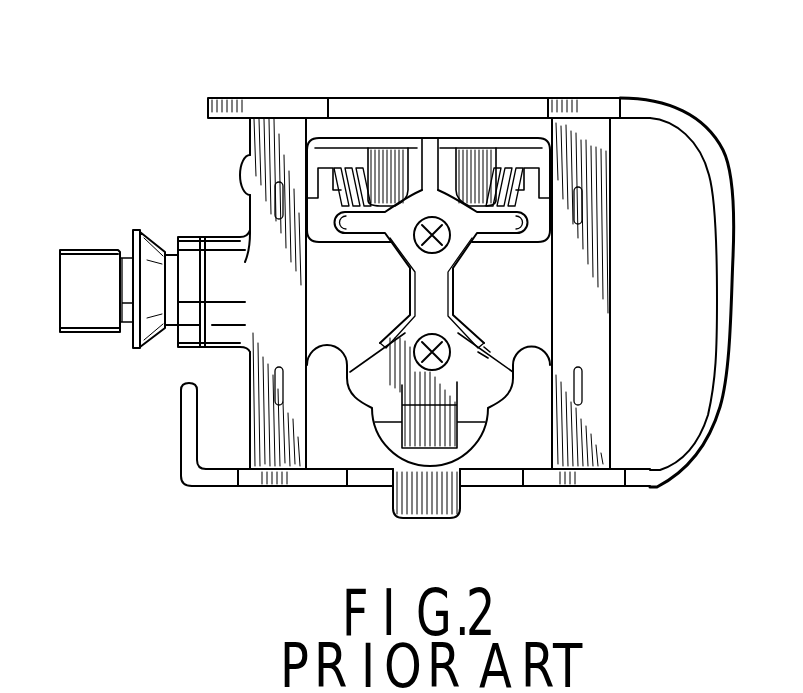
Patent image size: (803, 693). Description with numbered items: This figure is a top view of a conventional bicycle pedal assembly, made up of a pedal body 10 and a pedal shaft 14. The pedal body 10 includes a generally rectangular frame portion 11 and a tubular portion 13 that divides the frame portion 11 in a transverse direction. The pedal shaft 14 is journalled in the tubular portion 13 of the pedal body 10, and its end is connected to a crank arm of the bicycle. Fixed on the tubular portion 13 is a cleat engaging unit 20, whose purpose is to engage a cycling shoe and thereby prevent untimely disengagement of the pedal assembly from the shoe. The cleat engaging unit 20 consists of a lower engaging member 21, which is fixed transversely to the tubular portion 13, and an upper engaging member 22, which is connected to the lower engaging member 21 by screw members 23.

The pedal body 10 is at (591, 88).
The frame portion 11 is at (667, 113).
The tubular portion 13 is at (500, 274).
The pedal shaft 14 is at (95, 322).
The cleat engaging unit 20 is at (468, 301).
The lower engaging member 21 is at (517, 160).
The upper engaging member 22 is at (407, 443).
The screw members 23 is at (437, 219).